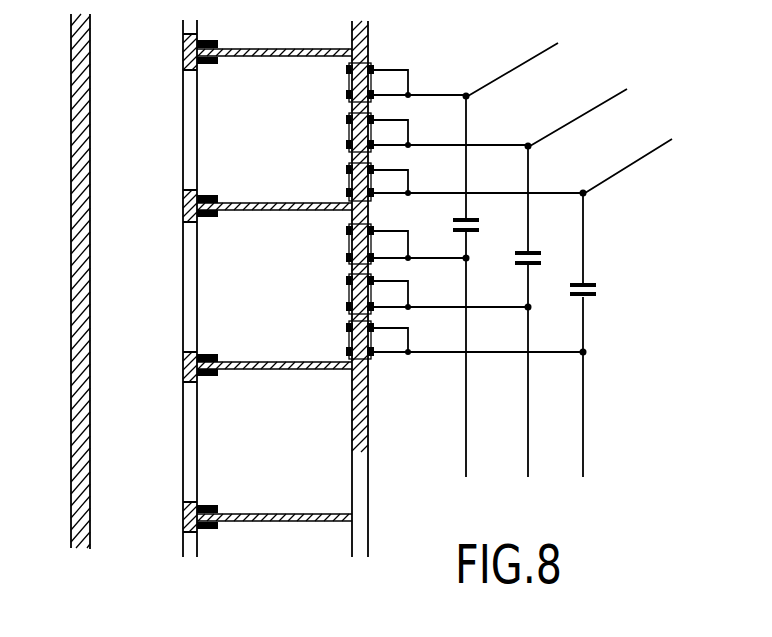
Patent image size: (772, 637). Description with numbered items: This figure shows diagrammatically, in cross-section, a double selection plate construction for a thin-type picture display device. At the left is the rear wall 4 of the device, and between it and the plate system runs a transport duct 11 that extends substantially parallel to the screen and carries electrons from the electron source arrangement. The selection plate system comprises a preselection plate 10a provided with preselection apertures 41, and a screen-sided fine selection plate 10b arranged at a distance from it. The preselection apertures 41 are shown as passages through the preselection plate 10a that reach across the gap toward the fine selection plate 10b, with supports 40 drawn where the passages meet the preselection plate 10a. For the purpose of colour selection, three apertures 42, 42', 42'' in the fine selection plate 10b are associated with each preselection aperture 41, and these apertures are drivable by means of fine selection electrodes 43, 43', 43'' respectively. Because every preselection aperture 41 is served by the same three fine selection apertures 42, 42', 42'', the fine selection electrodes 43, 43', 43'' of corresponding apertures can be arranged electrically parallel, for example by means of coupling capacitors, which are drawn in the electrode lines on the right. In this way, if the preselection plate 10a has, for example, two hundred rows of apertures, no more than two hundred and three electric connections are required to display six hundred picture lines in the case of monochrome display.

The rear wall 4 is at (75, 490).
The transport duct 11 is at (122, 241).
The preselection plate 10a is at (185, 549).
The fine selection plate 10b is at (358, 549).
The shelf clamp 40 is at (208, 64).
The preselection aperture 41 is at (197, 124).
The fine selection aperture 42 is at (331, 82).
The fine selection aperture 42' is at (331, 132).
The fine selection aperture 42'' is at (331, 182).
The fine selection electrode 43 is at (474, 260).
The fine selection electrode 43' is at (500, 283).
The fine selection electrode 43'' is at (523, 308).